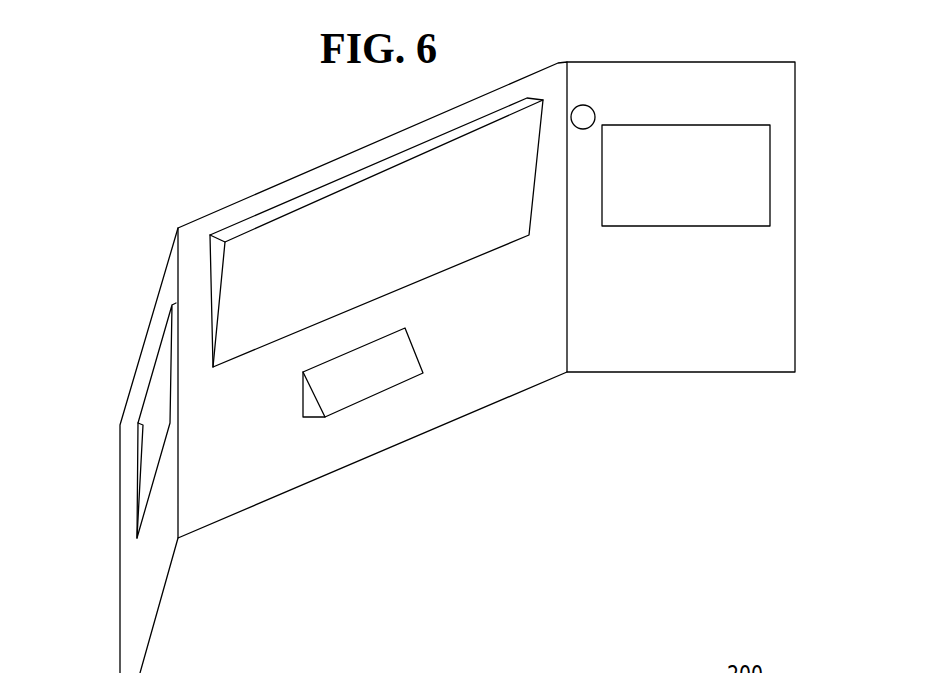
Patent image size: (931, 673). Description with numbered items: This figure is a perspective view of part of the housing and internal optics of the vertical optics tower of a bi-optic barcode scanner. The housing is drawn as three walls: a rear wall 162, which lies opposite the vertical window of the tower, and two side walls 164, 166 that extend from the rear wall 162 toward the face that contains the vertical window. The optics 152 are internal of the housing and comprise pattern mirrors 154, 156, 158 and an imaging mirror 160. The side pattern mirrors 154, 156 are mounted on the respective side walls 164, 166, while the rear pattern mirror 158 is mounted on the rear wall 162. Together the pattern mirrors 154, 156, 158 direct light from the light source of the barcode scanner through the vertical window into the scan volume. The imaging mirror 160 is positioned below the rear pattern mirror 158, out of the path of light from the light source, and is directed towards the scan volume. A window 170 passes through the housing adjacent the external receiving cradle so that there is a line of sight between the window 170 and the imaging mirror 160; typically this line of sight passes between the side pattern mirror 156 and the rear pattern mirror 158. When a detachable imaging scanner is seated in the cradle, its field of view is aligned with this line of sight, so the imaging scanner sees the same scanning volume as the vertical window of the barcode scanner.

The optics 152 is at (426, 322).
The side pattern mirror 154 is at (164, 397).
The side pattern mirror 156 is at (720, 137).
The rear pattern mirror 158 is at (341, 210).
The imaging mirror 160 is at (365, 382).
The rear wall 162 is at (535, 365).
The side wall 164 is at (148, 590).
The side wall 166 is at (713, 358).
The window 170 is at (588, 105).